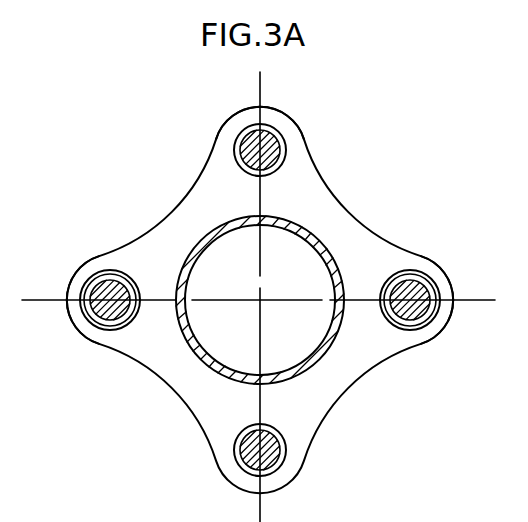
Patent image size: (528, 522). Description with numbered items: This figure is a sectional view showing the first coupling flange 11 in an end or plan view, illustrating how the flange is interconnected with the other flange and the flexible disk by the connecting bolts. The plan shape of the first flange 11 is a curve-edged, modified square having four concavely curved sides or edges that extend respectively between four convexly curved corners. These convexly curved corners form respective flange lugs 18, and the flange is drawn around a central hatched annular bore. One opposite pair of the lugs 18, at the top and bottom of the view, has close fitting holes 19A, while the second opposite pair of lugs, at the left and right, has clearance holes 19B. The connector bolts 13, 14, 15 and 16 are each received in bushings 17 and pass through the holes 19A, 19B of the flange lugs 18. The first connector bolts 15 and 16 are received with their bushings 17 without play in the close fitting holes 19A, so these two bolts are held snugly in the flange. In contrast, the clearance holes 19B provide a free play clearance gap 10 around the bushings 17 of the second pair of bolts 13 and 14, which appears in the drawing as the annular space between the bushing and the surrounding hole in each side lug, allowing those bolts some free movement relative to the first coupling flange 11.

The free play clearance gap 10 is at (77, 313).
The first coupling flange 11 is at (195, 373).
The connector bolt 13 is at (437, 283).
The connector bolt 14 is at (88, 288).
The first connector bolt 15 is at (278, 138).
The first connector bolt 16 is at (282, 460).
The bushing 17 is at (91, 331).
The flange lug 18 is at (233, 115).
The close fitting hole 19A is at (233, 144).
The clearance hole 19B is at (427, 273).